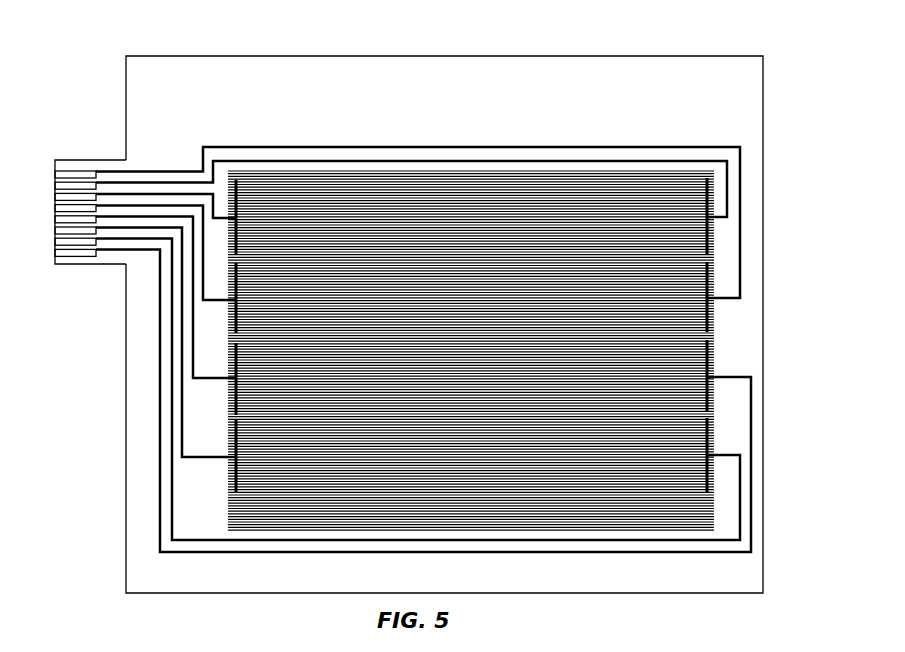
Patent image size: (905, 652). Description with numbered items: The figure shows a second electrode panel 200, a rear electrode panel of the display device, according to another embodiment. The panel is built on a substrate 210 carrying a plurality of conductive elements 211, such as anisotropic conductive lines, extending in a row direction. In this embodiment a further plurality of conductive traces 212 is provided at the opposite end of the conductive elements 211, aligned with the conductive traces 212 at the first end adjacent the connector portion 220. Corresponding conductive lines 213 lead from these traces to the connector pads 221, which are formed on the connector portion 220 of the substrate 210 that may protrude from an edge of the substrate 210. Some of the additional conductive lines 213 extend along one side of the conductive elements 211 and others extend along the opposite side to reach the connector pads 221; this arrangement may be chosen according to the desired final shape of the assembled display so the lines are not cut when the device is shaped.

The second electrode panel 200 is at (438, 306).
The substrate 210 is at (753, 112).
The conductive elements 211 is at (622, 508).
The conductive traces 212 is at (235, 483).
The conductive lines 213 is at (182, 360).
The connector portion 220 is at (69, 196).
The connector pads 221 is at (75, 176).